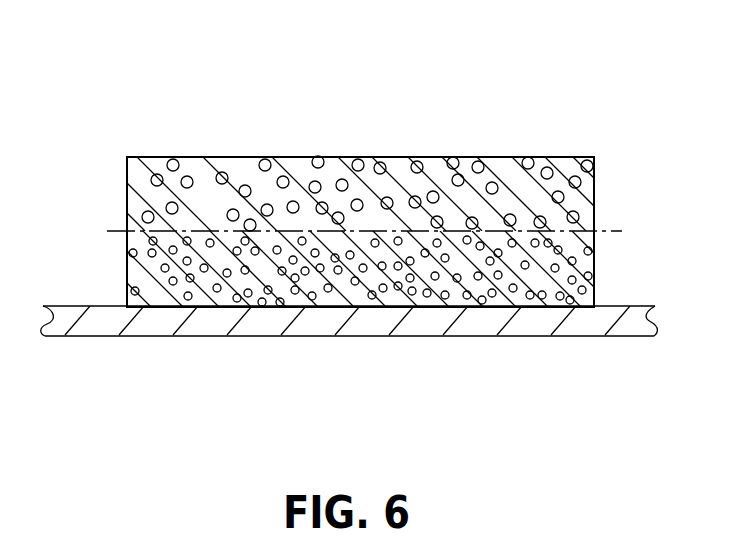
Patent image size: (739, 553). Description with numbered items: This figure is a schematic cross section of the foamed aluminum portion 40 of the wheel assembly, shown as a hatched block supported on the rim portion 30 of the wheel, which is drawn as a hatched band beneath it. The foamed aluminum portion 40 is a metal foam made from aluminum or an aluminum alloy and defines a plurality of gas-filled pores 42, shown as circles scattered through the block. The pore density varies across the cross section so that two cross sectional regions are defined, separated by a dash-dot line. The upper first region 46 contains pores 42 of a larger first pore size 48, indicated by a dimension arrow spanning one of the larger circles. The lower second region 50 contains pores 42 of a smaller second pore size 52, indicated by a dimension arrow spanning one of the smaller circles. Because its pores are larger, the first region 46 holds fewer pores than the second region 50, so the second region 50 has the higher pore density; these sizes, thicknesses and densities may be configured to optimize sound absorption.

The rim portion 30 is at (593, 325).
The foamed aluminum portion 40 is at (370, 184).
The pores 42 is at (465, 173).
The first region 46 is at (625, 157).
The first pore size 48 is at (245, 215).
The second region 50 is at (625, 231).
The second pore size 52 is at (204, 241).